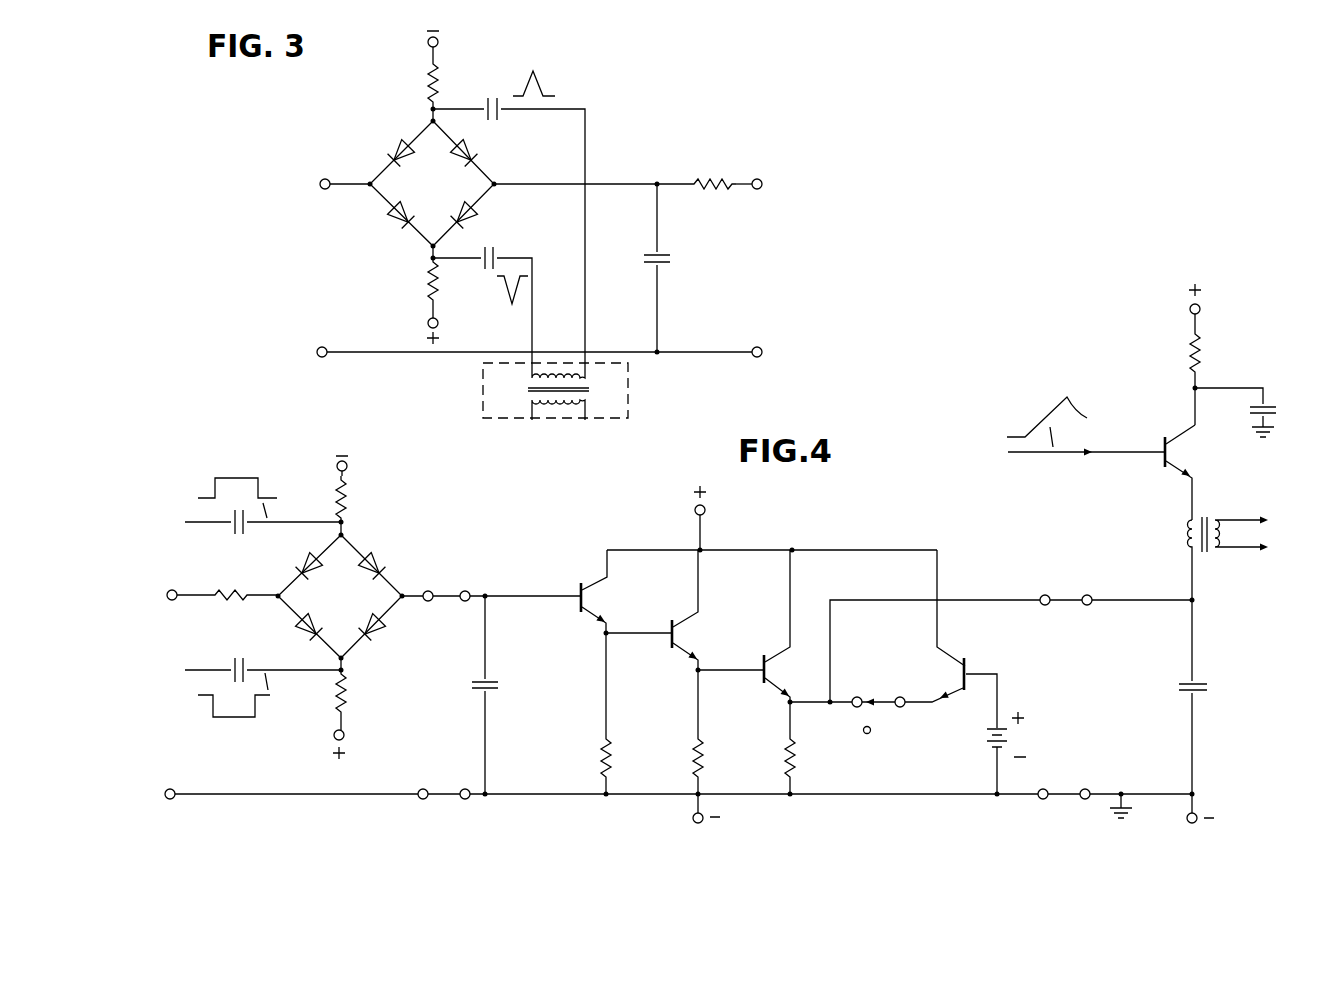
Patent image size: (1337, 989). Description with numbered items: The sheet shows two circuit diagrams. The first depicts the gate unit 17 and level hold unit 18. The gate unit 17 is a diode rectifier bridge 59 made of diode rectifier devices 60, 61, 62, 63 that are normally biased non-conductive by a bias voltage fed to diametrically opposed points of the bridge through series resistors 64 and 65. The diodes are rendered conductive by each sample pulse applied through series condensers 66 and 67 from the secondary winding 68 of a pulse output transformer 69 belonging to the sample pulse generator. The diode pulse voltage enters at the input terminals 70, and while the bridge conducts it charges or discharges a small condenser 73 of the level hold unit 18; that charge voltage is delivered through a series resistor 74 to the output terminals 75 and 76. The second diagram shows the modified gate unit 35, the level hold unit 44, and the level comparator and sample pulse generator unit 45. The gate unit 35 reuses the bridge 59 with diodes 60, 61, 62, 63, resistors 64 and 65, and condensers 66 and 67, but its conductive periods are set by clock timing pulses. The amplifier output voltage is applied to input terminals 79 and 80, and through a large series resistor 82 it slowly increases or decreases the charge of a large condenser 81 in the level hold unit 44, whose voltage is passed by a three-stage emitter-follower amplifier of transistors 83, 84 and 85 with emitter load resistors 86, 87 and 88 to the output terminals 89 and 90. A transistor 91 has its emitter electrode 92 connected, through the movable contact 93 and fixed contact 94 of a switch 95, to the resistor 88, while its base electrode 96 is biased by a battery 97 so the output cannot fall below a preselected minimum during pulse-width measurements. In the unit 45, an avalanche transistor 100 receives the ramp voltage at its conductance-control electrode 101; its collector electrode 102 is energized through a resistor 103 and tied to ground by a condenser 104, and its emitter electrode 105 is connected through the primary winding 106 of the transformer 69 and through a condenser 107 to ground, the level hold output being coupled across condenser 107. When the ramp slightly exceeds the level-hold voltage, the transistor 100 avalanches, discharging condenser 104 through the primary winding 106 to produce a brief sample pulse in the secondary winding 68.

In FIG. 3, the gate unit 17 is at (378, 283).
In FIG. 3, the level hold unit 18 is at (740, 250).
In FIG. 4, the gate unit 35 is at (412, 688).
In FIG. 4, the level hold unit 44 is at (477, 630).
In FIG. 3, the level comparator and sample pulse generator unit 45 is at (482, 389).
In FIG. 4, the level comparator and sample pulse generator unit 45 is at (1140, 530).
In FIG. 3, the diode rectifier bridge 59 is at (443, 190).
In FIG. 4, the diode rectifier bridge 59 is at (352, 598).
In FIG. 3, the diode rectifier device 60 is at (392, 150).
In FIG. 4, the diode rectifier device 60 is at (301, 566).
In FIG. 3, the diode rectifier device 61 is at (471, 152).
In FIG. 4, the diode rectifier device 61 is at (381, 565).
In FIG. 3, the diode rectifier device 62 is at (391, 220).
In FIG. 4, the diode rectifier device 62 is at (300, 626).
In FIG. 3, the diode rectifier device 63 is at (476, 219).
In FIG. 4, the diode rectifier device 63 is at (378, 635).
In FIG. 3, the series resistor 64 is at (428, 75).
In FIG. 4, the series resistor 64 is at (349, 498).
In FIG. 3, the series resistor 65 is at (441, 286).
In FIG. 4, the series resistor 65 is at (346, 699).
In FIG. 3, the series condenser 66 is at (489, 98).
In FIG. 4, the series condenser 66 is at (231, 530).
In FIG. 3, the series condenser 67 is at (500, 252).
In FIG. 4, the series condenser 67 is at (246, 664).
In FIG. 3, the secondary winding 68 is at (552, 373).
In FIG. 4, the secondary winding 68 is at (1222, 538).
In FIG. 3, the pulse output transformer 69 is at (590, 396).
In FIG. 4, the pulse output transformer 69 is at (1210, 562).
In FIG. 3, the input terminals 70 is at (320, 180).
In FIG. 3, the condenser 73 is at (668, 264).
In FIG. 3, the series resistor 74 is at (709, 178).
In FIG. 3, the output terminal 75 is at (761, 180).
In FIG. 3, the output terminal 76 is at (761, 347).
In FIG. 4, the input terminal 79 is at (168, 590).
In FIG. 4, the input terminal 80 is at (167, 788).
In FIG. 4, the condenser 81 is at (493, 680).
In FIG. 4, the series resistor 82 is at (220, 602).
In FIG. 4, the transistor 83 is at (578, 590).
In FIG. 4, the transistor 84 is at (671, 625).
In FIG. 4, the transistor 85 is at (763, 663).
In FIG. 4, the emitter load resistor 86 is at (612, 753).
In FIG. 4, the emitter load resistor 87 is at (704, 753).
In FIG. 4, the emitter load resistor 88 is at (796, 753).
In FIG. 4, the output terminal 89 is at (1041, 596).
In FIG. 4, the output terminal 90 is at (1047, 789).
In FIG. 4, the transistor 91 is at (988, 667).
In FIG. 4, the emitter electrode 92 is at (955, 694).
In FIG. 4, the movable contact 93 is at (898, 697).
In FIG. 4, the fixed contact 94 is at (855, 697).
In FIG. 4, the switch 95 is at (884, 716).
In FIG. 4, the base electrode 96 is at (968, 665).
In FIG. 4, the battery 97 is at (1013, 742).
In FIG. 4, the avalanche transistor 100 is at (1163, 438).
In FIG. 4, the conductance-control electrode 101 is at (1164, 468).
In FIG. 4, the collector electrode 102 is at (1190, 432).
In FIG. 4, the resistor 103 is at (1205, 352).
In FIG. 4, the condenser 104 is at (1272, 405).
In FIG. 4, the emitter electrode 105 is at (1184, 470).
In FIG. 4, the primary winding 106 is at (1190, 534).
In FIG. 4, the condenser 107 is at (1200, 693).